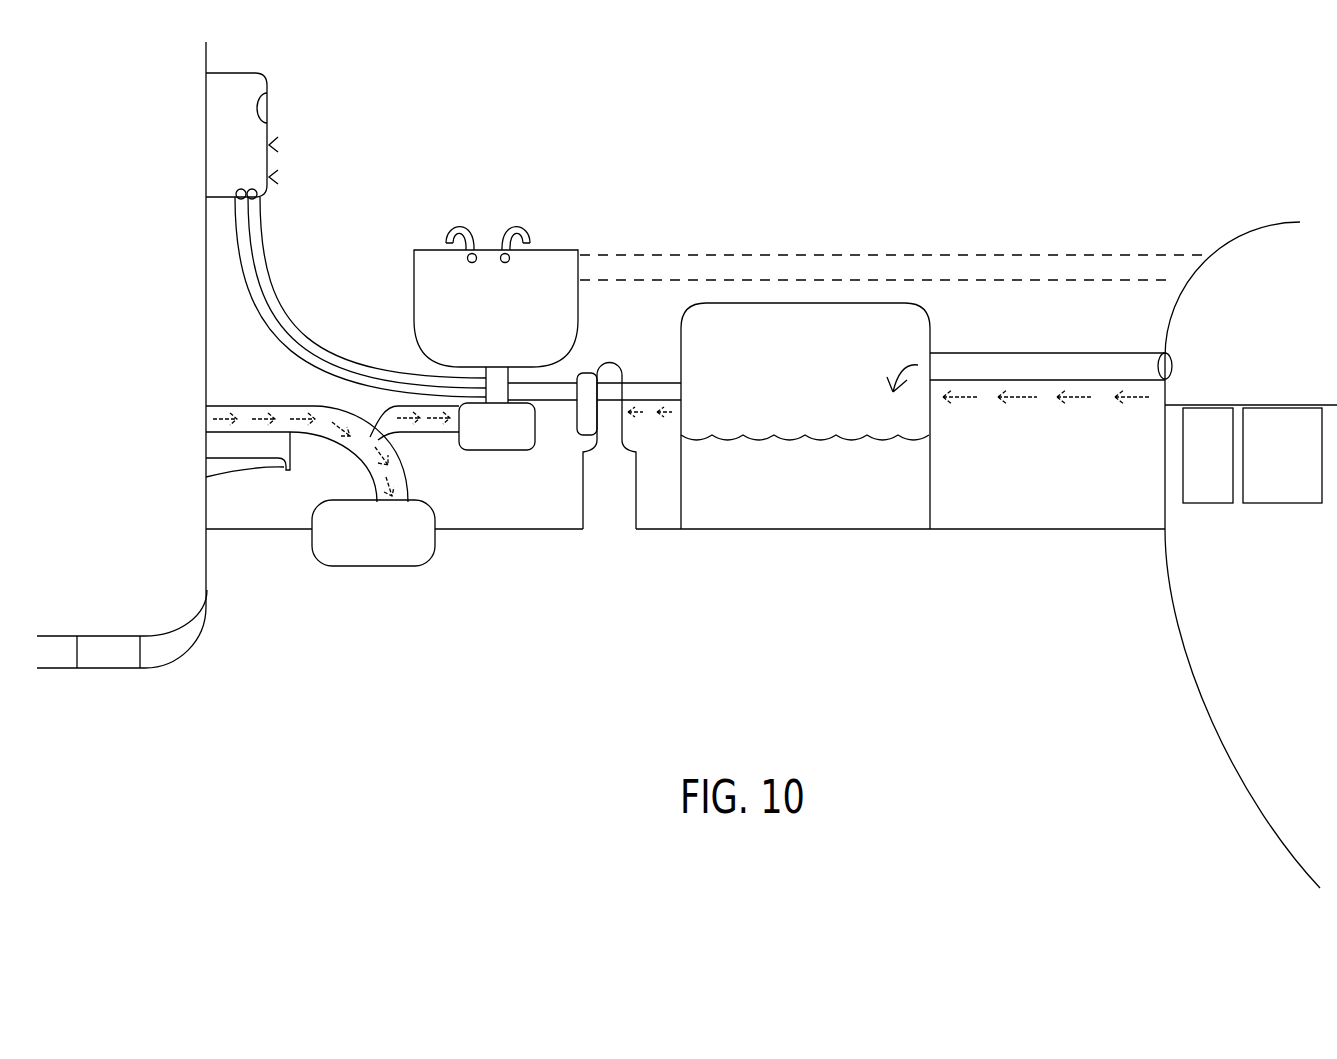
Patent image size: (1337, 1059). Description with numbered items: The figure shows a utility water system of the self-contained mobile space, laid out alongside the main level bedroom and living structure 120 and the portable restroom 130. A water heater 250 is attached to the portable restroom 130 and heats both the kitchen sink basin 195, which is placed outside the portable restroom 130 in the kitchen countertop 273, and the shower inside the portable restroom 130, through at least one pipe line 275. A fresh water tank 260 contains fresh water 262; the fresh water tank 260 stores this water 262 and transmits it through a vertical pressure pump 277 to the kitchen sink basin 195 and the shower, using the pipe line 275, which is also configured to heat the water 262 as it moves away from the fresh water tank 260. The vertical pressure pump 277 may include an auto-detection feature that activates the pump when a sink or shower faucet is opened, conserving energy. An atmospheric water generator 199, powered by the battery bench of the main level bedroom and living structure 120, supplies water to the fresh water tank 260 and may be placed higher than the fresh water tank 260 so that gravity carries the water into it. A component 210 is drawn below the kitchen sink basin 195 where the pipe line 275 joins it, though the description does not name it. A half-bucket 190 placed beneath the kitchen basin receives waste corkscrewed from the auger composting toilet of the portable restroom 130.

The main level bedroom and living structure 120 is at (1190, 650).
The portable restroom 130 is at (90, 603).
The half-bucket 190 is at (387, 565).
The kitchen sink basin 195 is at (541, 248).
The atmospheric water generator 199 is at (1228, 243).
The valve 210 is at (477, 452).
The water heater 250 is at (267, 73).
The fresh water tank 260 is at (876, 322).
The fresh water 262 is at (840, 507).
The kitchen countertop 273 is at (766, 248).
The pipe line 275 is at (650, 382).
The vertical pressure pump 277 is at (584, 445).